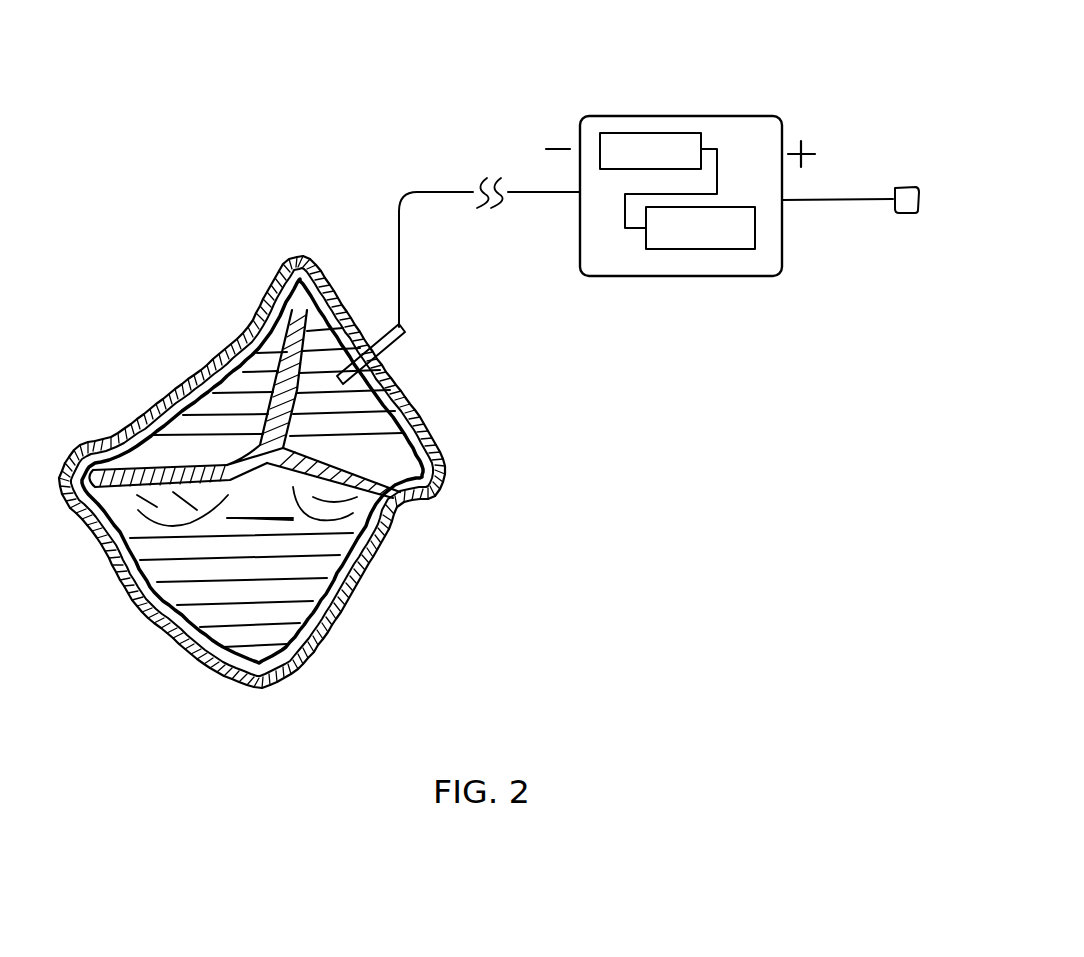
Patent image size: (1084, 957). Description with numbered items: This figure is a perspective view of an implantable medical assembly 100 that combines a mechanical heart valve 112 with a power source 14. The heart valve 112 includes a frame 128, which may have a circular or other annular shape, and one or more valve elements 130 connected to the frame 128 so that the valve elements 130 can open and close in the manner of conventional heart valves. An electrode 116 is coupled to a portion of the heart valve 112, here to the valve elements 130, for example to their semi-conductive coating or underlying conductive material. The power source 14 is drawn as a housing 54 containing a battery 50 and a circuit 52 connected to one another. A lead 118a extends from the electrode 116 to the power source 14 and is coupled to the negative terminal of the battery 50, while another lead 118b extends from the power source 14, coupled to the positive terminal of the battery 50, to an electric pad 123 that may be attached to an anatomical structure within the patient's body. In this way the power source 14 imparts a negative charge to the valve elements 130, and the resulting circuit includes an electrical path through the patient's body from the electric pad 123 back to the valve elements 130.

The power source 14 is at (678, 86).
The battery 50 is at (622, 133).
The battery 52 is at (729, 249).
The housing 54 is at (646, 276).
The implantable medical assembly 100 is at (124, 238).
The mechanical heart valve 112 is at (392, 594).
The electrode 116 is at (401, 352).
The lead 118a is at (428, 188).
The lead 118b is at (836, 199).
The electric pad 123 is at (904, 187).
The frame 128 is at (222, 668).
The valve elements 130 is at (190, 427).